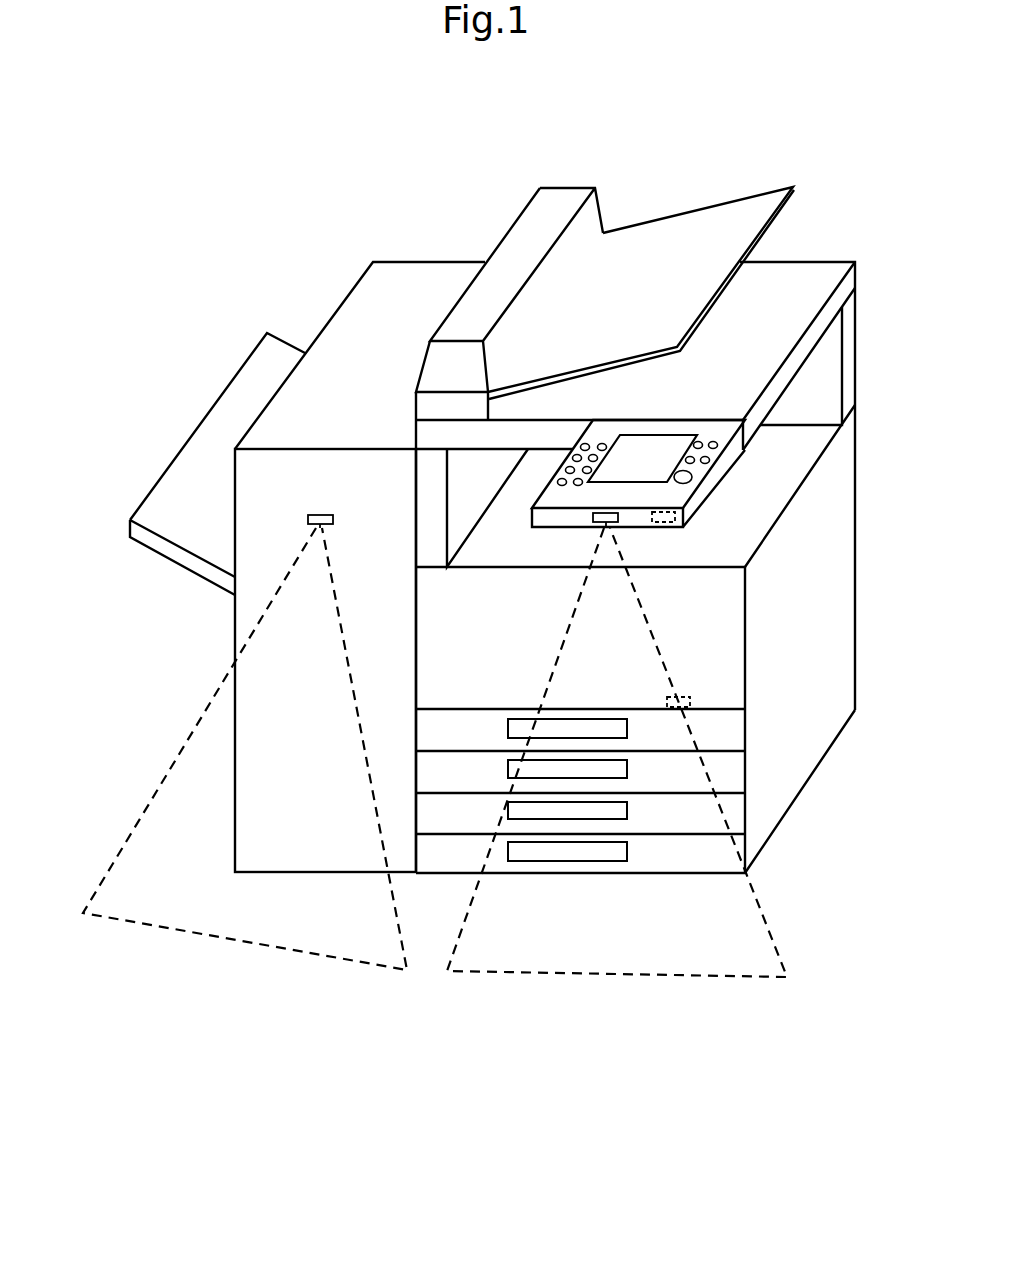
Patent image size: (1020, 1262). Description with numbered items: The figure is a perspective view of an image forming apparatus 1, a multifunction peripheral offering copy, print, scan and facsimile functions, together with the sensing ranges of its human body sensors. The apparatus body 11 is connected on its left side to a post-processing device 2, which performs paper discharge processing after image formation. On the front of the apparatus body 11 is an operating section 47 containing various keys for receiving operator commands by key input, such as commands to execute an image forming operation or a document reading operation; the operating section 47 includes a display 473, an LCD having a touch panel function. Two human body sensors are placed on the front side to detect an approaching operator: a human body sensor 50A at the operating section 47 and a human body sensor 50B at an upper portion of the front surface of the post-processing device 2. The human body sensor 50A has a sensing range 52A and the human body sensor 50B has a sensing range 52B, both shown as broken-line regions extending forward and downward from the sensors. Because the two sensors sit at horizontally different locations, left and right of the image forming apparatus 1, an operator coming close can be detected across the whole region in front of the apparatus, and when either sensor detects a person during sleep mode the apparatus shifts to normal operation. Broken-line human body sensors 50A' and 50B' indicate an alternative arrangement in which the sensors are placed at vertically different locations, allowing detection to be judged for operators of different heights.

The image forming apparatus 1 is at (811, 206).
The post-processing device 2 is at (349, 264).
The apparatus body 11 is at (807, 757).
The operating section 47 is at (630, 428).
The display 473 is at (685, 434).
The human body sensor 50A is at (553, 538).
The human body sensor 50A' is at (702, 535).
The human body sensor 50B is at (212, 486).
The human body sensor 50B' is at (741, 700).
The sensing range 52A is at (728, 978).
The sensing range 52B is at (305, 953).